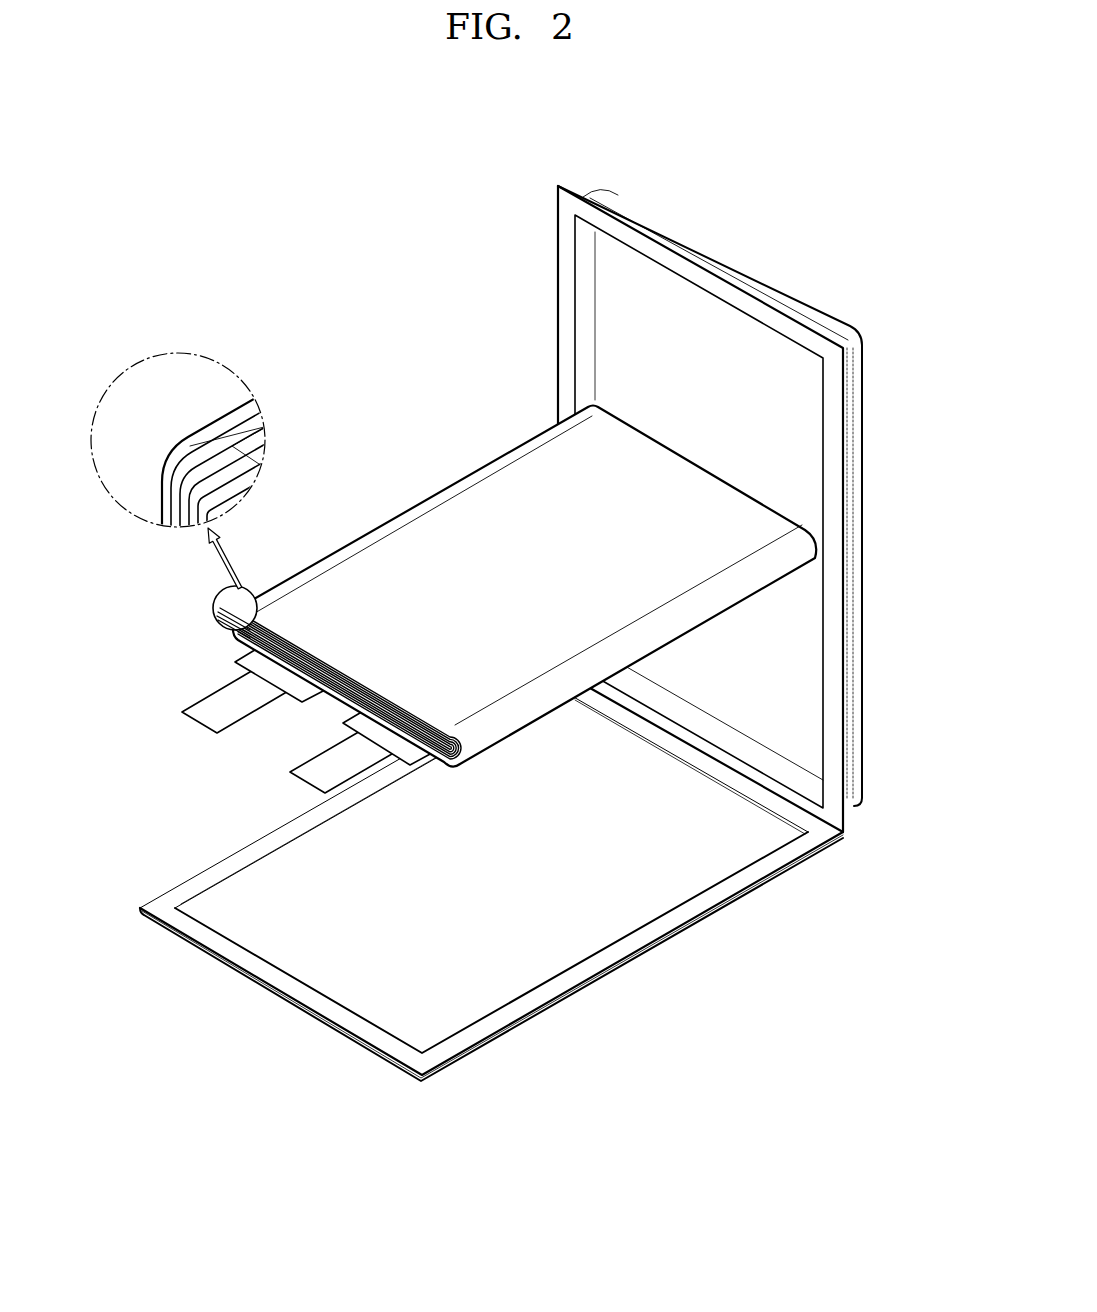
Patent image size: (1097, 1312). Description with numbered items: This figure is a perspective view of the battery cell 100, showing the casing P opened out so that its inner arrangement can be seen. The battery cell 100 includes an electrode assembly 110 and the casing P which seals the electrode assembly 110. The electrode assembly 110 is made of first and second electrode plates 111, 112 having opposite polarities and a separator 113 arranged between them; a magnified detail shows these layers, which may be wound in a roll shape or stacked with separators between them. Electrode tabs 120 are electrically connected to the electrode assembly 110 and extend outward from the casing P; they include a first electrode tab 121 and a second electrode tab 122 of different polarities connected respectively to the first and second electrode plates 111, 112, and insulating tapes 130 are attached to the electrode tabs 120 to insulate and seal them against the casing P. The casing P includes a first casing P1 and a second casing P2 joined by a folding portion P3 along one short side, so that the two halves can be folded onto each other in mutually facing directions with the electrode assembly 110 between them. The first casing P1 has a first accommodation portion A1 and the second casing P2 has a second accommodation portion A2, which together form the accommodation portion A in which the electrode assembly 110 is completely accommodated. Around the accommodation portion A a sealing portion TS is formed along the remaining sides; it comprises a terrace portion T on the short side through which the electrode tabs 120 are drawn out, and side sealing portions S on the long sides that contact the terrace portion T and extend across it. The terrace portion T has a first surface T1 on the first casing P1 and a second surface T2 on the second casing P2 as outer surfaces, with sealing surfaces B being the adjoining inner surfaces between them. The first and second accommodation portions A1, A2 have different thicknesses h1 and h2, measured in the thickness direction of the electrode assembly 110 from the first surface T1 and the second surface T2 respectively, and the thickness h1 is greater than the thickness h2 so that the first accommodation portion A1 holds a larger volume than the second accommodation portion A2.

The battery cell 100 is at (901, 146).
The electrode assembly 110 is at (378, 493).
The first electrode plate 111 is at (167, 458).
The second electrode plate 112 is at (183, 505).
The separator 113 is at (174, 485).
The electrode tabs 120 is at (271, 731).
The first electrode tab 121 is at (293, 773).
The second electrode tab 122 is at (187, 712).
The insulating tapes 130 is at (240, 660).
The terrace portion T is at (728, 490).
The first surface T1 is at (679, 198).
The second surface T2 is at (209, 994).
The first accommodation portion A1 is at (740, 268).
The second accommodation portion A2 is at (649, 1003).
The accommodation portion A is at (339, 1019).
The sealing surfaces B is at (264, 1024).
The side sealing portions S is at (149, 872).
The sealing portion TS is at (72, 910).
The casing P is at (507, 900).
The first casing P1 is at (845, 723).
The second casing P2 is at (745, 890).
The folding portion P3 is at (873, 863).
The thickness of the first accommodation portion h1 is at (536, 160).
The thickness of the second accommodation portion h2 is at (455, 1098).